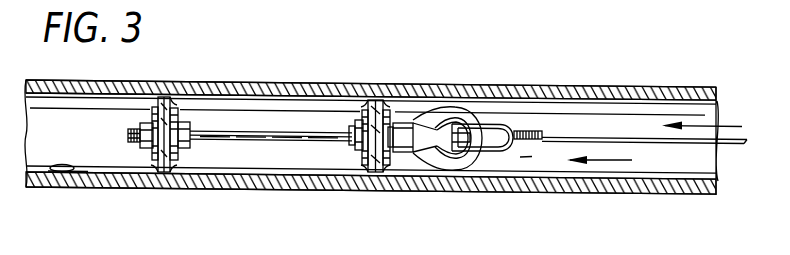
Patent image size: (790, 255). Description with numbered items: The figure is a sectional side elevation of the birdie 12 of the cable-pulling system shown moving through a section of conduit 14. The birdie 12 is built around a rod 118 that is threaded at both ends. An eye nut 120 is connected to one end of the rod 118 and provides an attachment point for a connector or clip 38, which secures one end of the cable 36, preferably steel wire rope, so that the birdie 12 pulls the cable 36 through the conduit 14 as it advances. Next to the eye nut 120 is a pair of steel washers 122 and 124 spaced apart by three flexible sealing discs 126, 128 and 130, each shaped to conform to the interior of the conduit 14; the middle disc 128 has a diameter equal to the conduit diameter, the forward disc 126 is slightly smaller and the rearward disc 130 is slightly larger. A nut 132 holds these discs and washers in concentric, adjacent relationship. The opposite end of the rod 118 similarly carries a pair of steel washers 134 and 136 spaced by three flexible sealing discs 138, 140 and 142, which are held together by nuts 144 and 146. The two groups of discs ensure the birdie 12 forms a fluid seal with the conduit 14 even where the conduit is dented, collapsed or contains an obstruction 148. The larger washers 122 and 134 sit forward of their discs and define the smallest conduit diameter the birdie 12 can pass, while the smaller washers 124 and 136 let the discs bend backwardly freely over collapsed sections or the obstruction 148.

The birdie 12 is at (274, 143).
The conduit 14 is at (553, 86).
The cable 36 is at (739, 147).
The connector or clip 38 is at (631, 147).
The rod 118 is at (315, 141).
The eye nut 120 is at (452, 108).
The steel washer 122 is at (364, 170).
The steel washer 124 is at (405, 121).
The forward flexible sealing disc 126 is at (367, 108).
The middle flexible sealing disc 128 is at (373, 100).
The rearward flexible sealing disc 130 is at (384, 101).
The nut 132 is at (356, 146).
The steel washer 134 is at (143, 152).
The steel washer 136 is at (175, 168).
The flexible sealing disc 138 is at (158, 100).
The flexible sealing disc 140 is at (163, 98).
The flexible sealing disc 142 is at (173, 101).
The nut 144 is at (141, 126).
The nut 146 is at (196, 125).
The obstruction 148 is at (56, 172).